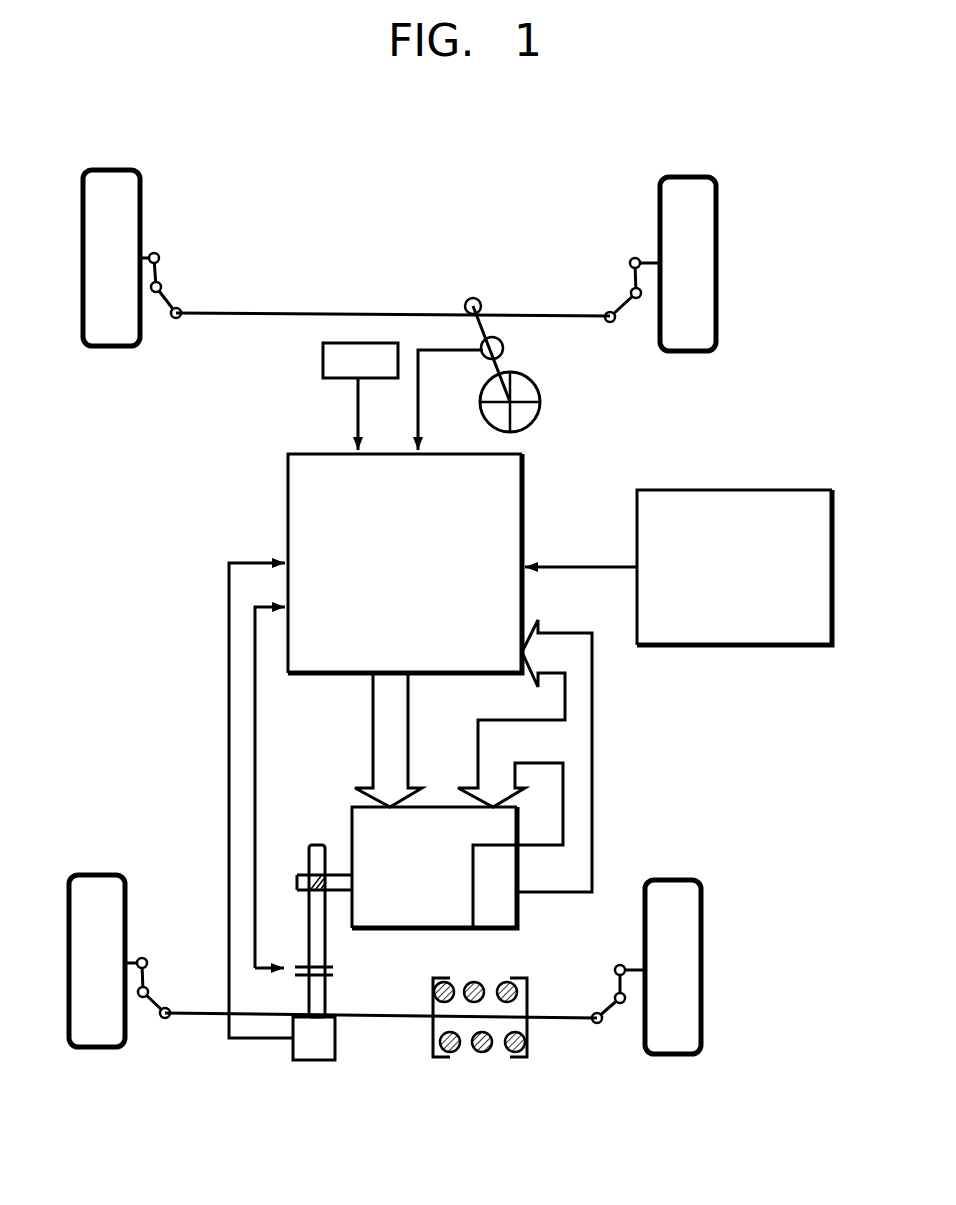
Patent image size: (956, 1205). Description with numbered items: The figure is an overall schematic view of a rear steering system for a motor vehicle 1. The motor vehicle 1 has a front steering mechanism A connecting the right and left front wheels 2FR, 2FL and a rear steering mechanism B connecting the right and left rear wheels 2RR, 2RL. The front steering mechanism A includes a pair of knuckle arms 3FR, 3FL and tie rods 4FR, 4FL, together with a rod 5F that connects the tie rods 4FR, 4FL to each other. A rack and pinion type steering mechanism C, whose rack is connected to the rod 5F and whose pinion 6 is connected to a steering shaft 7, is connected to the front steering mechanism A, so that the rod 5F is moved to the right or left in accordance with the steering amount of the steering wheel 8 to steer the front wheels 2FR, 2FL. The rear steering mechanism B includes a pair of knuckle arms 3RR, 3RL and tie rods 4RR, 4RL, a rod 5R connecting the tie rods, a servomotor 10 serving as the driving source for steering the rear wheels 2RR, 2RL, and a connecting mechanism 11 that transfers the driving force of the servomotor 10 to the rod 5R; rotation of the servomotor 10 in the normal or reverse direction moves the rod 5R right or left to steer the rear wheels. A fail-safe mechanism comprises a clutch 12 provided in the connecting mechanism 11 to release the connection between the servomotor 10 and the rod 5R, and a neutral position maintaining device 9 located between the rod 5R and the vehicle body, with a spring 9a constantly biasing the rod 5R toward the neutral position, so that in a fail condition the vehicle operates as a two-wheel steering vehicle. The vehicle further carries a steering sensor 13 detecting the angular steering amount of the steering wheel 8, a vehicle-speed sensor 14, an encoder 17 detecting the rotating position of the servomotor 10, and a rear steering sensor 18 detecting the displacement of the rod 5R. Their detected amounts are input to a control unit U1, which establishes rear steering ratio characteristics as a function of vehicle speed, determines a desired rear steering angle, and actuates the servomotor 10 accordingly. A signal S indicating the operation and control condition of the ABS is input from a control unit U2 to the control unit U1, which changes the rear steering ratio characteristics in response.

The motor vehicle 1 is at (188, 556).
The left front wheel 2FL is at (114, 350).
The right front wheel 2FR is at (696, 355).
The left rear wheel 2RL is at (98, 1050).
The right rear wheel 2RR is at (678, 1056).
The knuckle arm 3FL is at (158, 273).
The knuckle arm 3FR is at (631, 280).
The knuckle arm 3RL is at (146, 974).
The knuckle arm 3RR is at (618, 984).
The tie rod 4FL is at (173, 318).
The tie rod 4FR is at (617, 324).
The tie rod 4RL is at (164, 1018).
The tie rod 4RR is at (601, 1022).
The rod 5F is at (287, 312).
The rod 5R is at (375, 1018).
The pinion 6 is at (473, 298).
The steering shaft 7 is at (492, 340).
The steering wheel 8 is at (536, 414).
The neutral position maintaining device 9 is at (480, 981).
The spring 9a is at (452, 1053).
The servomotor 10 is at (430, 903).
The connecting mechanism 11 is at (296, 860).
The clutch 12 is at (338, 969).
The steering sensor 13 is at (485, 356).
The vehicle-speed sensor 14 is at (322, 352).
The encoder 17 is at (511, 903).
The rear steering sensor 18 is at (317, 1062).
The front steering mechanism A is at (387, 305).
The rear steering mechanism B is at (485, 1058).
The rack and pinion type steering mechanism C is at (545, 400).
The signal S is at (581, 545).
The control unit U1 is at (405, 563).
The control unit U2 is at (734, 567).